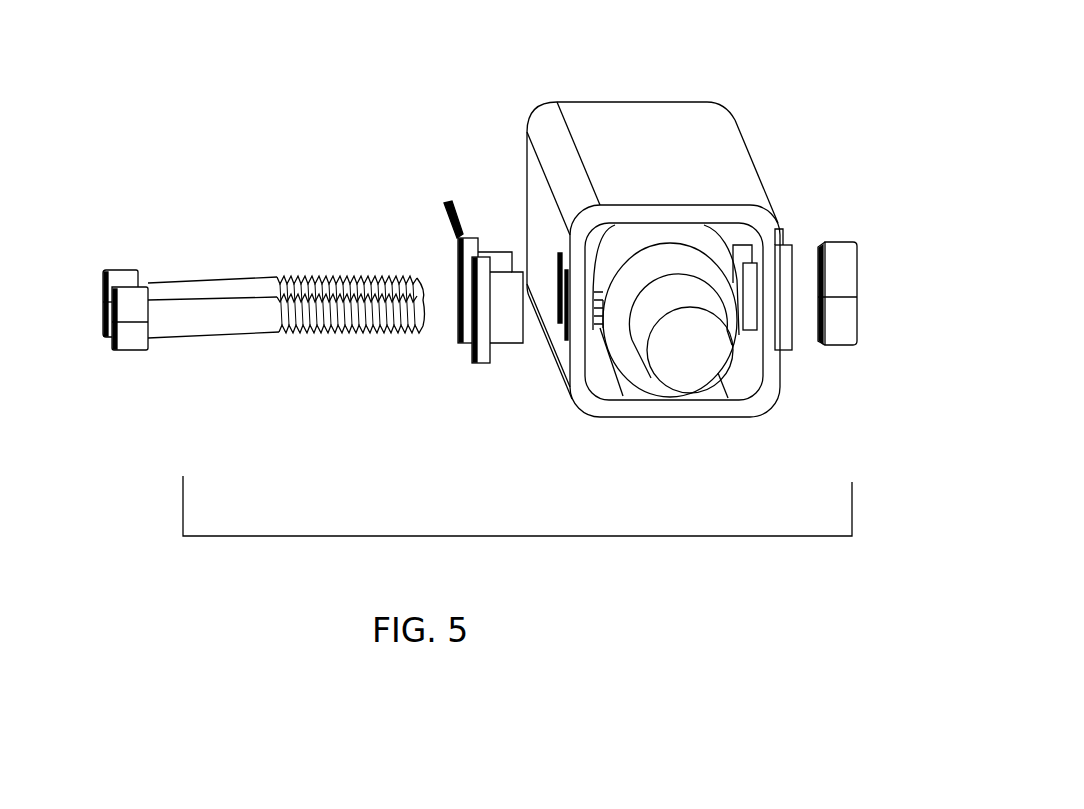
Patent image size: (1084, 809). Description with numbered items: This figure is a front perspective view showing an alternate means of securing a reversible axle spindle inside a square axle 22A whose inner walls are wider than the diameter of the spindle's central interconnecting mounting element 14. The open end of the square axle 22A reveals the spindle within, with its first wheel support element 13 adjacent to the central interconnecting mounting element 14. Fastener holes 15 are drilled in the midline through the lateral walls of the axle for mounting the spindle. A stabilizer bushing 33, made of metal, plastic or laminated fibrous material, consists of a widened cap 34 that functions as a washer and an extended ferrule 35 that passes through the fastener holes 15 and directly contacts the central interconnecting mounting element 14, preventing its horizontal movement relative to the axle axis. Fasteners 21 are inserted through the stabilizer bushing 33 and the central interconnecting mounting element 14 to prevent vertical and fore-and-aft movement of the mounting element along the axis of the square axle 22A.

The first wheel support element 13 is at (676, 358).
The central interconnecting mounting element 14 is at (623, 288).
The fastener holes 15 is at (560, 278).
The fasteners 21 is at (203, 318).
The square axle 22A is at (640, 148).
The stabilizer bushing 33 is at (448, 208).
The widened cap 34 is at (483, 330).
The extended ferrule 35 is at (512, 343).